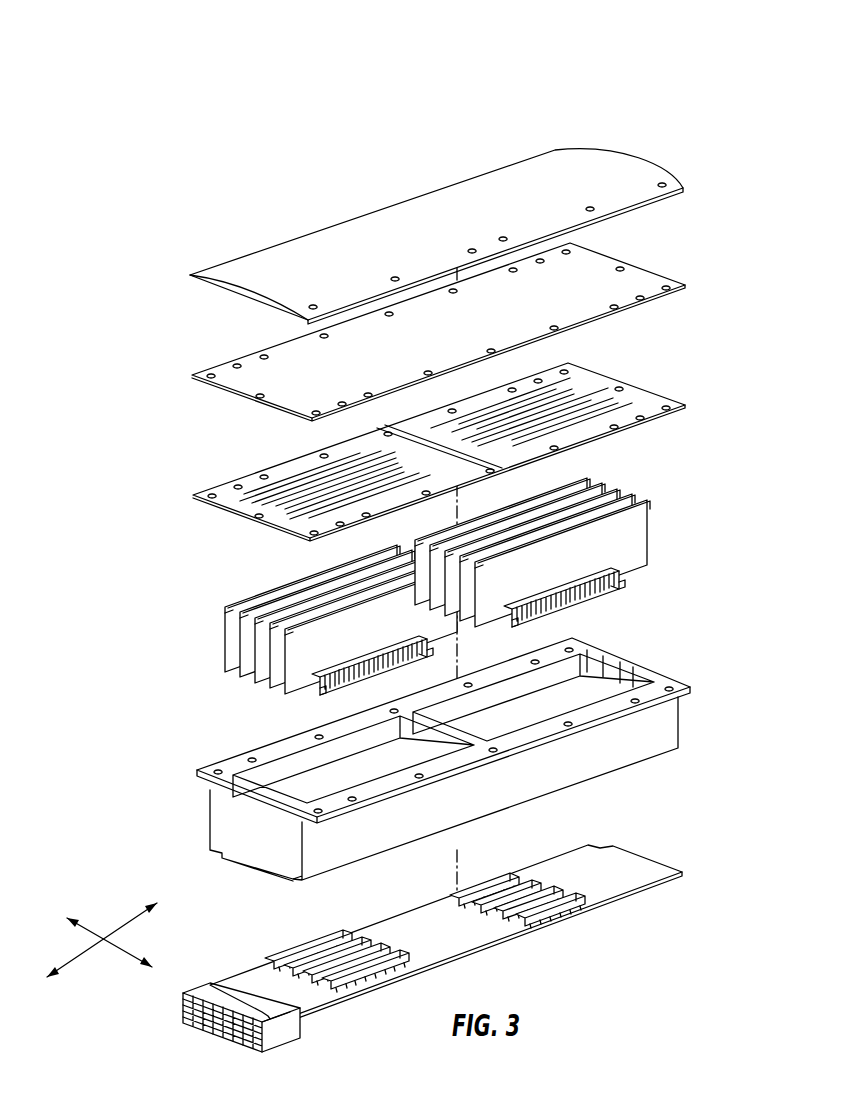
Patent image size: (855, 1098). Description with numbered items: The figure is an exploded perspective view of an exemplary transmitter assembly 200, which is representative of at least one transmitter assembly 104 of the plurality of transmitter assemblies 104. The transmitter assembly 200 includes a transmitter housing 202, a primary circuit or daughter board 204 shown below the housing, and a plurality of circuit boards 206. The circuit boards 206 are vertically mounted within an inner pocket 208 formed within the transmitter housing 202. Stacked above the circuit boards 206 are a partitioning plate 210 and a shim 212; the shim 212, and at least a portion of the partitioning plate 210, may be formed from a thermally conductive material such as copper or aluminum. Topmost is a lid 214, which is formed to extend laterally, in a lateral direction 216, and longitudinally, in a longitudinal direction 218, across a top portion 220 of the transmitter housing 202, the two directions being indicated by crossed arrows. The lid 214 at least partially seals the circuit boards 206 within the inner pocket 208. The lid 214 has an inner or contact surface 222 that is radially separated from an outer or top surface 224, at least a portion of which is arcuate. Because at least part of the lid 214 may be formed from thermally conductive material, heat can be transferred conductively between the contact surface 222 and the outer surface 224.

The transmitter assembly 200 is at (553, 78).
The transmitter assembly 104 is at (586, 82).
The lid 214 is at (604, 165).
The outer surface 224 is at (308, 255).
The contact surface 222 is at (267, 310).
The shim 212 is at (650, 268).
The partitioning plate 210 is at (645, 386).
The circuit board 206 is at (657, 520).
The inner pocket 208 is at (555, 678).
The top portion 220 is at (662, 662).
The transmitter housing 202 is at (697, 733).
The daughter board 204 is at (707, 870).
The longitudinal direction 218 is at (128, 922).
The lateral direction 216 is at (113, 947).